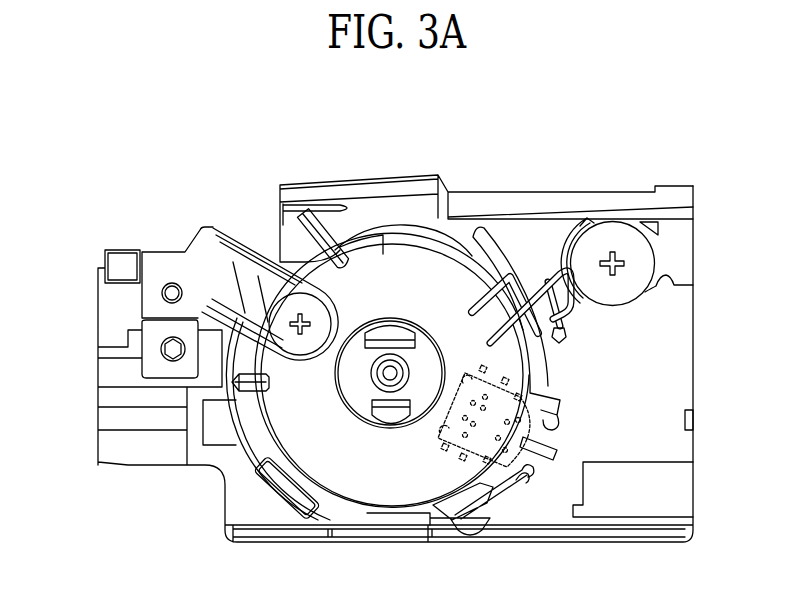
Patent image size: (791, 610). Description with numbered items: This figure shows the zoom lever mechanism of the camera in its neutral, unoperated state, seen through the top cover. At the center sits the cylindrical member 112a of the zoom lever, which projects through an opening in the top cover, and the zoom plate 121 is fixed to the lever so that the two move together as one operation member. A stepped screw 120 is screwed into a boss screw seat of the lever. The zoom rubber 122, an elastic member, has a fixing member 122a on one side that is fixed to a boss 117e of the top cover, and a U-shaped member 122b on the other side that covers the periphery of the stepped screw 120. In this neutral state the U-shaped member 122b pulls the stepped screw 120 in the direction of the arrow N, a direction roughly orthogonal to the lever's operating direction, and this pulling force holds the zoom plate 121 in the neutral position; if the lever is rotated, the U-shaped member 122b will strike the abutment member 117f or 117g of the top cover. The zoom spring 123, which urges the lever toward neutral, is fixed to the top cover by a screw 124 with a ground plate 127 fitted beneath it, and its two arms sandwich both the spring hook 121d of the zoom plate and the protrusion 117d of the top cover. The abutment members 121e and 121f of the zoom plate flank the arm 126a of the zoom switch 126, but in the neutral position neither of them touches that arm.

The cylindrical member 112a is at (357, 400).
The protrusion 117d is at (552, 290).
The boss 117e is at (165, 293).
The abutment member 117f is at (245, 390).
The abutment member 117g is at (330, 245).
The stepped screw 120 is at (327, 312).
The zoom plate 121 is at (447, 262).
The spring hook 121d is at (508, 278).
The abutment member 121e is at (560, 408).
The abutment member 121f is at (512, 490).
The zoom rubber 122 is at (252, 267).
The fixing member 122a is at (150, 310).
The U-shaped member 122b is at (262, 262).
The zoom spring 123 is at (573, 313).
The screw 124 is at (632, 285).
The zoom switch 126 is at (512, 398).
The arm 126a is at (555, 455).
The ground plate 127 is at (682, 243).
The arrow N is at (330, 315).